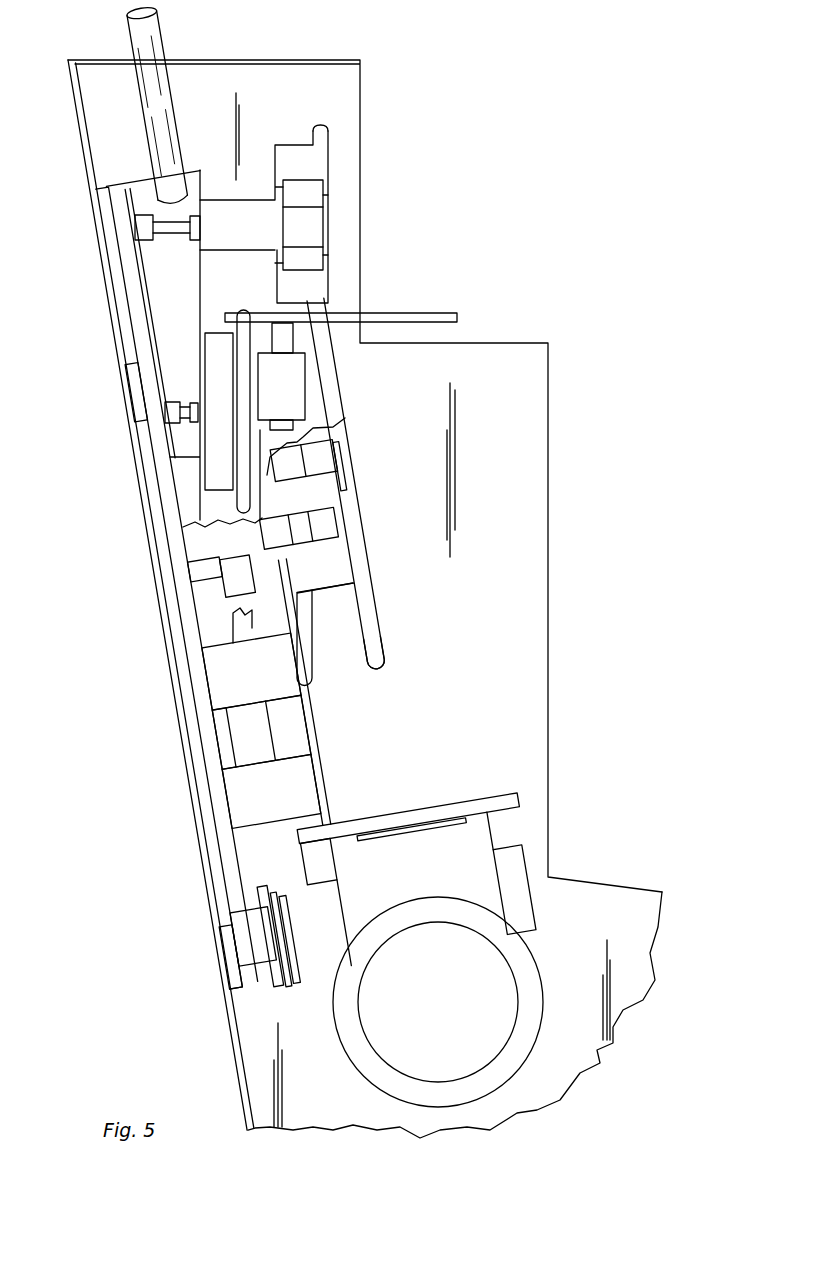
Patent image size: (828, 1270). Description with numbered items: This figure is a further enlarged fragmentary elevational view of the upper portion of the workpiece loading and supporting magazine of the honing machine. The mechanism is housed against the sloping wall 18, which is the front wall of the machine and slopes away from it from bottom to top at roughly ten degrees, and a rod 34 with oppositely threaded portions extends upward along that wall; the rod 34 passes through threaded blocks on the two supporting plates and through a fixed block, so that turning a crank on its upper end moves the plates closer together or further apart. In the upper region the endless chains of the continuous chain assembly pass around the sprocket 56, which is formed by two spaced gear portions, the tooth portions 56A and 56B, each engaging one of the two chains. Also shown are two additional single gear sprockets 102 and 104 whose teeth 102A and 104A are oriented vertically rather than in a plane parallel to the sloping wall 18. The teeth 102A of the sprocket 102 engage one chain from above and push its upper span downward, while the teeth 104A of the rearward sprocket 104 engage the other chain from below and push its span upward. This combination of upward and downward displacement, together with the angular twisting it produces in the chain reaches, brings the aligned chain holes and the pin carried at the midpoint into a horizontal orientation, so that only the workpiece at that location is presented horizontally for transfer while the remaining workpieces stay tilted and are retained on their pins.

The sloping wall 18 is at (162, 620).
The rod 34 is at (152, 42).
The sprocket 56 is at (367, 557).
The tooth portion 56A is at (307, 680).
The tooth portion 56B is at (378, 662).
The single gear sprocket 102 is at (332, 167).
The teeth 102A is at (325, 132).
The rearward sprocket 104 is at (212, 367).
The teeth 104A is at (247, 310).